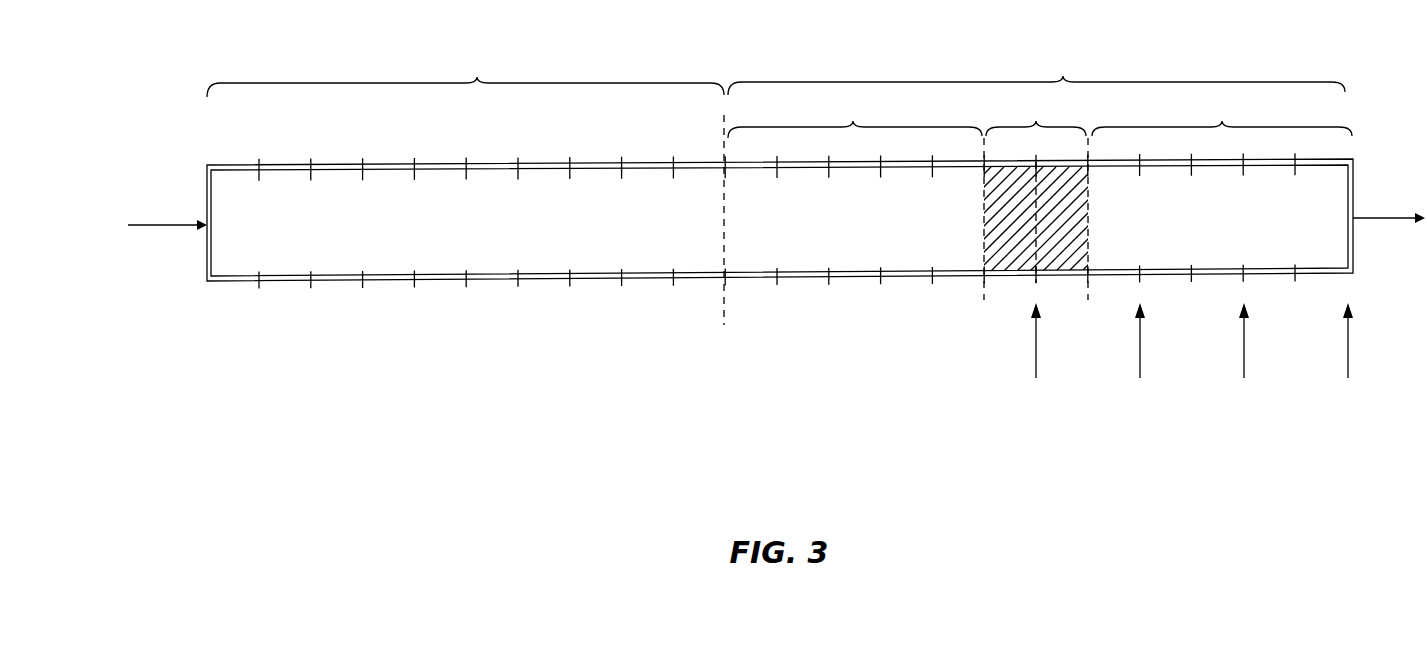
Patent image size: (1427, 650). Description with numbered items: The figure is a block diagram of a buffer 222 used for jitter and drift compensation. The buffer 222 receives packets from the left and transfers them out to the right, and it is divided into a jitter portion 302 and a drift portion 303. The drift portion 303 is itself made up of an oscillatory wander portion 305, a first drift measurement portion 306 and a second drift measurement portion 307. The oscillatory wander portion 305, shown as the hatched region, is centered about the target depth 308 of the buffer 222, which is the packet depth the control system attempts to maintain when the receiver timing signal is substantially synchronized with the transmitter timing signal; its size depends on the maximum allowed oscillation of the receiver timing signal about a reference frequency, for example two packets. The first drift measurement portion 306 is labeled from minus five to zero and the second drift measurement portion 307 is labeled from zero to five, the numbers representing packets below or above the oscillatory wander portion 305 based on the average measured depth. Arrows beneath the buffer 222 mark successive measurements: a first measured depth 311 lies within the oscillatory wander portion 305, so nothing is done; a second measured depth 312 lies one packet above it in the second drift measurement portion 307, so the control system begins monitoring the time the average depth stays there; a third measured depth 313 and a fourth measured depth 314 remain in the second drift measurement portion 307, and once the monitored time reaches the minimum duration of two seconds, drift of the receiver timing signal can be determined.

The buffer 222 is at (480, 425).
The jitter portion 302 is at (465, 73).
The drift portion 303 is at (1036, 70).
The oscillatory wander portion 305 is at (1030, 198).
The first drift measurement portion 306 is at (855, 118).
The second drift measurement portion 307 is at (1222, 116).
The target depth 308 is at (1036, 281).
The first measured depth 311 is at (1036, 358).
The second measured depth 312 is at (1140, 358).
The third measured depth 313 is at (1244, 358).
The fourth measured depth 314 is at (1348, 358).